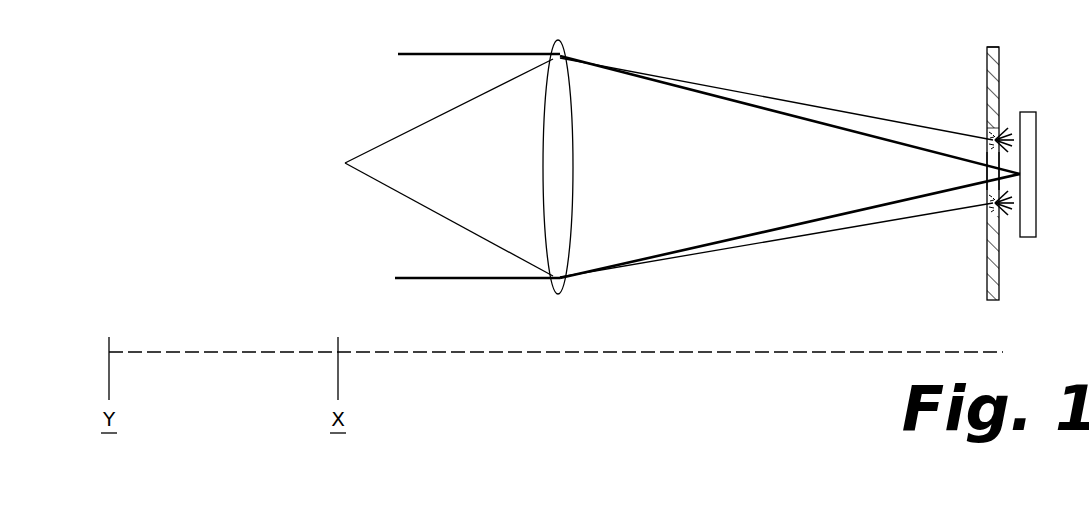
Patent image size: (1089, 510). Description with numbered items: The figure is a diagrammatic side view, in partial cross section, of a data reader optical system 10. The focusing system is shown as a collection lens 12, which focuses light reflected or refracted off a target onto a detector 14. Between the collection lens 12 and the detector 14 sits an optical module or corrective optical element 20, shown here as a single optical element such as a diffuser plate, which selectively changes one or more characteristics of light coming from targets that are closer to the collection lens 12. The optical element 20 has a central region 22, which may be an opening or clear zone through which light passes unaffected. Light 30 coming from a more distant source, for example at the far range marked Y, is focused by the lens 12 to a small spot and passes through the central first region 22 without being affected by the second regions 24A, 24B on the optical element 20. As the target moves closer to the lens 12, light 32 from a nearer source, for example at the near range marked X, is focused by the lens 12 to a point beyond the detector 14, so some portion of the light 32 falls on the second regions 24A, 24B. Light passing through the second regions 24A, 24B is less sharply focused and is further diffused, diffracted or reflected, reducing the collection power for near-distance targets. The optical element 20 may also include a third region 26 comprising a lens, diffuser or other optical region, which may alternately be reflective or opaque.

The optical system 10 is at (769, 62).
The collection lens 12 is at (558, 242).
The detector 14 is at (1033, 218).
The optical element 20 is at (1006, 286).
The central region 22 is at (988, 172).
The second region 24A is at (988, 210).
The second region 24B is at (988, 136).
The third region 26 is at (996, 63).
The light from distant source 30 is at (436, 56).
The light from near source 32 is at (443, 115).